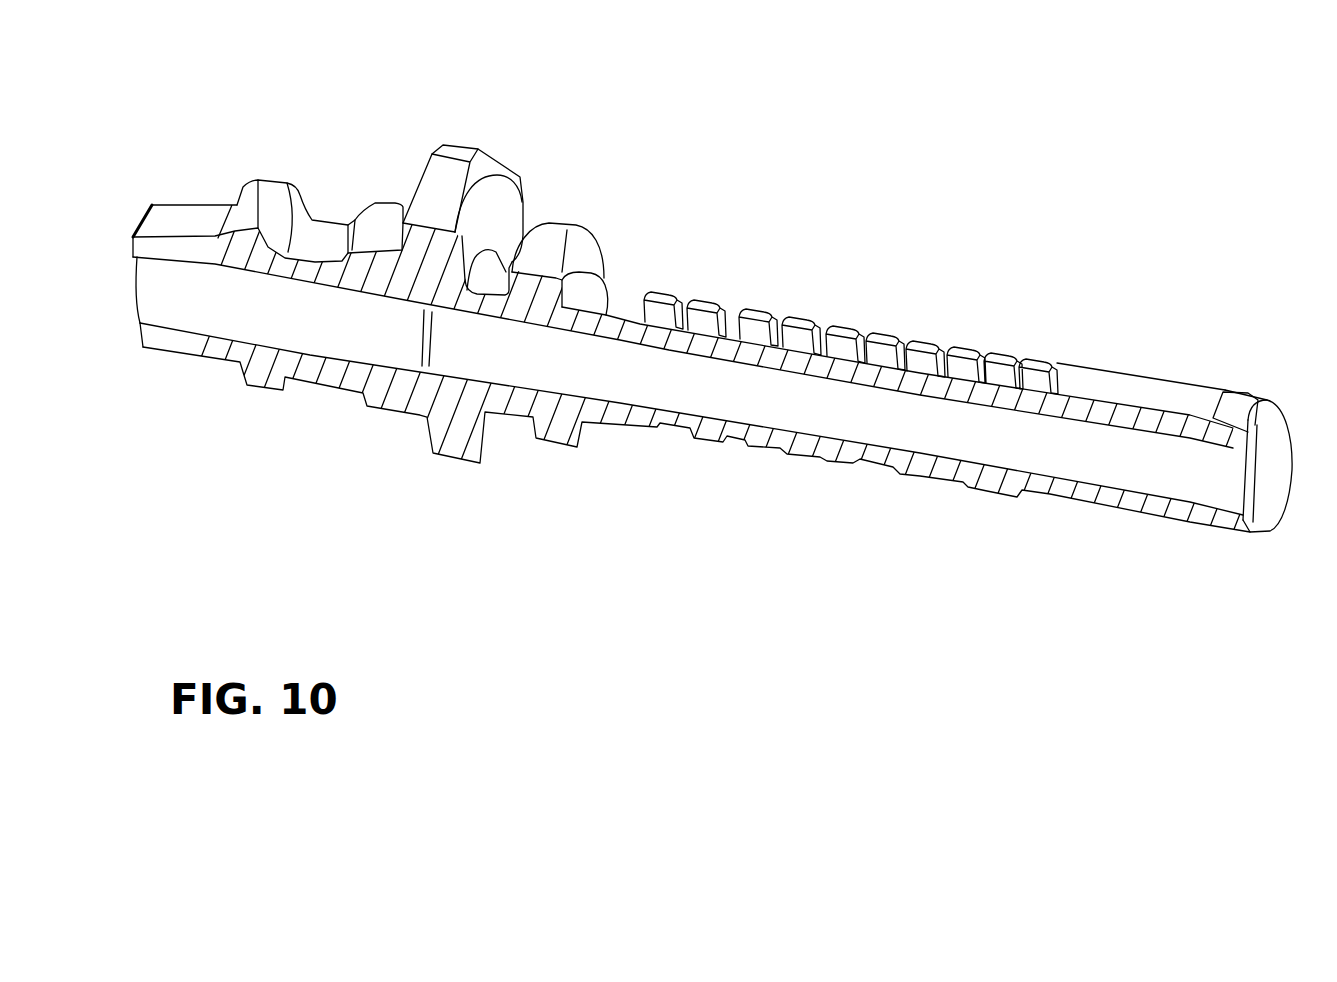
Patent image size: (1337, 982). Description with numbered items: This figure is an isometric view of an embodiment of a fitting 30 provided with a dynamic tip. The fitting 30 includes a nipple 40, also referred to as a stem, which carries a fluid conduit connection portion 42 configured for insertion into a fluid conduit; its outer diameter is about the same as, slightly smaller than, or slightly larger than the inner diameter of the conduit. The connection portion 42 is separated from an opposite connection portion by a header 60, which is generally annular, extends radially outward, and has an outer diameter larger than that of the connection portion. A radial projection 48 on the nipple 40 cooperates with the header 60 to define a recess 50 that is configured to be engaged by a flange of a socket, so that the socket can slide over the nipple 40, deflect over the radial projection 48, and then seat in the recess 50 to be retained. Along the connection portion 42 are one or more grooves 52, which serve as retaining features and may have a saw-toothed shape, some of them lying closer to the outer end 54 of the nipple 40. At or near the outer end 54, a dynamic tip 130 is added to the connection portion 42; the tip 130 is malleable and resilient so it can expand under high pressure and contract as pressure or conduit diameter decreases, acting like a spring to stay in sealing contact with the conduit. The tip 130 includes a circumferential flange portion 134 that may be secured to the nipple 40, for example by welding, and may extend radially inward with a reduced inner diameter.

The fitting 30 is at (972, 186).
The nipple 40 is at (316, 137).
The fluid conduit connection portion 42 is at (1068, 488).
The radial projection 48 is at (567, 247).
The recess 50 is at (540, 210).
The grooves 52 is at (960, 334).
The outer end 54 is at (1245, 384).
The header 60 is at (452, 170).
The dynamic tip 130 is at (1291, 399).
The circumferential flange portion 134 is at (1257, 522).